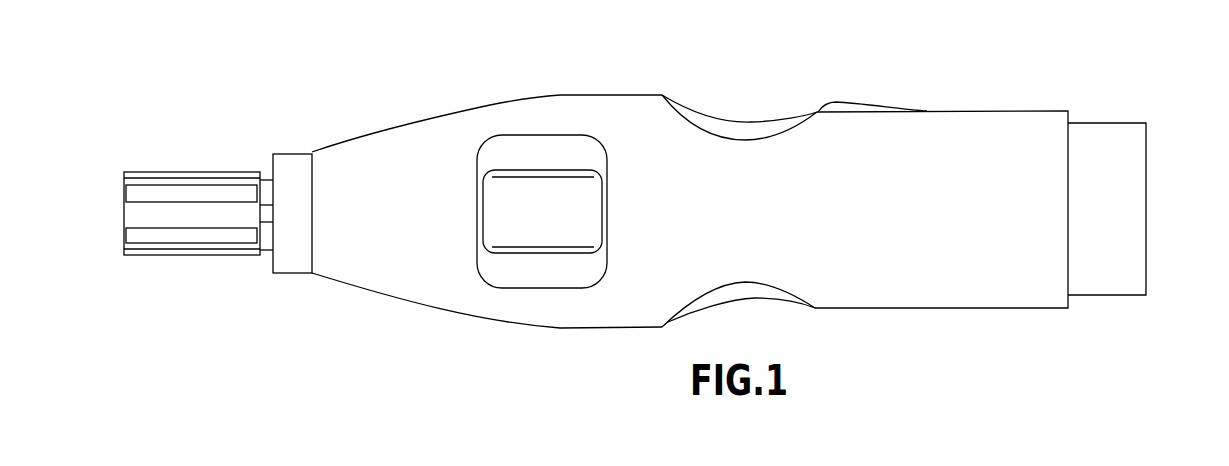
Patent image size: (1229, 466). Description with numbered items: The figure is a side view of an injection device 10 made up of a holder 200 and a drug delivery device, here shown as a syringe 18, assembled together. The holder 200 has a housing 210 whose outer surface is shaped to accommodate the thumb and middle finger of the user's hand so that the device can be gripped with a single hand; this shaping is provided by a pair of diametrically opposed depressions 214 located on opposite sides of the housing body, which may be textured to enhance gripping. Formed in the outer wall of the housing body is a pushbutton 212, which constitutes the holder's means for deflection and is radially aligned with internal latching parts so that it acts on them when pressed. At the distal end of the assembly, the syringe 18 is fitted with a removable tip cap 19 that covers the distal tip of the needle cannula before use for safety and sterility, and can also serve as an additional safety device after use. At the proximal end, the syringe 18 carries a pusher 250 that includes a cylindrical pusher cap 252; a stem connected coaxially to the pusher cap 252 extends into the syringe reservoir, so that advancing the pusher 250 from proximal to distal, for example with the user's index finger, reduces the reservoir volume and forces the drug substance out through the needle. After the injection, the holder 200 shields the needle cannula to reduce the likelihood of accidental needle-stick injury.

The injection device 10 is at (350, 70).
The syringe 18 is at (261, 266).
The removable tip cap 19 is at (212, 258).
The holder 200 is at (550, 90).
The housing 210 is at (490, 105).
The pushbutton 212 is at (836, 96).
The depressions 214 is at (692, 118).
The pusher 250 is at (1137, 187).
The pusher cap 252 is at (1147, 262).